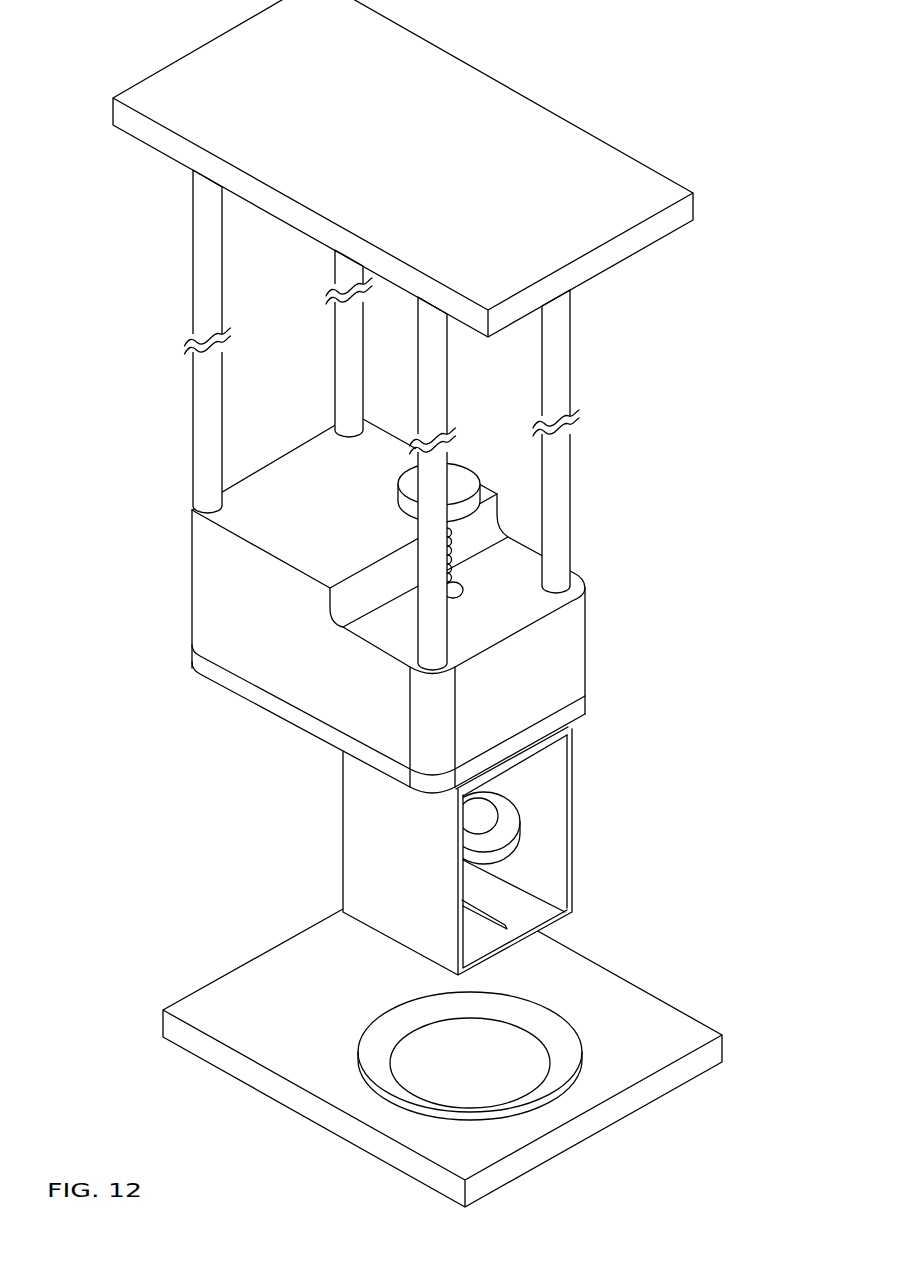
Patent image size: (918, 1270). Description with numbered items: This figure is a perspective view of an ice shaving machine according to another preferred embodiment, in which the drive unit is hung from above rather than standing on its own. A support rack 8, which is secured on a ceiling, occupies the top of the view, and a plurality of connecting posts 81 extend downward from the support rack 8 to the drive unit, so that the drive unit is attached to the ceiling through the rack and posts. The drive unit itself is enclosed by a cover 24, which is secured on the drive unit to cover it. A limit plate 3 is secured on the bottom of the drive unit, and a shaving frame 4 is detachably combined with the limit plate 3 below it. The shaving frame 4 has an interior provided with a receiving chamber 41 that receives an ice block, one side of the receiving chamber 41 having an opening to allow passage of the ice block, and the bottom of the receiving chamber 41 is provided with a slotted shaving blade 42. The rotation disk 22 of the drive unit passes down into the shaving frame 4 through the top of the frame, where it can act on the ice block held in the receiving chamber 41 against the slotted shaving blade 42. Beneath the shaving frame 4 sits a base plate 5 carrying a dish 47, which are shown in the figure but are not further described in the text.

The support rack 8 is at (187, 150).
The connecting posts 81 is at (205, 415).
The cover 24 is at (252, 670).
The limit plate 3 is at (558, 736).
The rotation disk 22 is at (493, 817).
The shaving frame 4 is at (352, 876).
The receiving chamber 41 is at (548, 883).
The slotted shaving blade 42 is at (510, 912).
The dish 47 is at (520, 1075).
The base plate 5 is at (675, 1037).